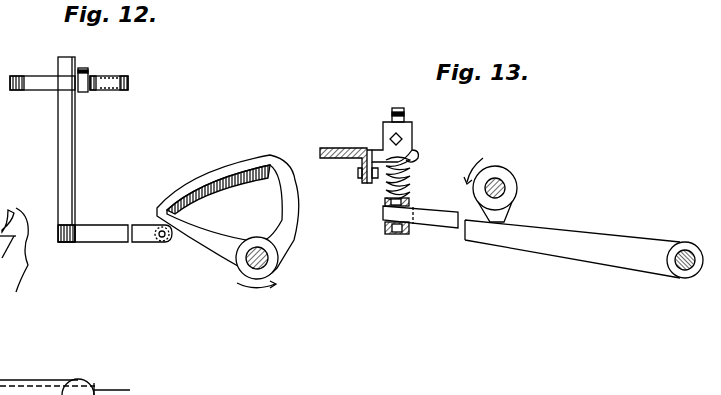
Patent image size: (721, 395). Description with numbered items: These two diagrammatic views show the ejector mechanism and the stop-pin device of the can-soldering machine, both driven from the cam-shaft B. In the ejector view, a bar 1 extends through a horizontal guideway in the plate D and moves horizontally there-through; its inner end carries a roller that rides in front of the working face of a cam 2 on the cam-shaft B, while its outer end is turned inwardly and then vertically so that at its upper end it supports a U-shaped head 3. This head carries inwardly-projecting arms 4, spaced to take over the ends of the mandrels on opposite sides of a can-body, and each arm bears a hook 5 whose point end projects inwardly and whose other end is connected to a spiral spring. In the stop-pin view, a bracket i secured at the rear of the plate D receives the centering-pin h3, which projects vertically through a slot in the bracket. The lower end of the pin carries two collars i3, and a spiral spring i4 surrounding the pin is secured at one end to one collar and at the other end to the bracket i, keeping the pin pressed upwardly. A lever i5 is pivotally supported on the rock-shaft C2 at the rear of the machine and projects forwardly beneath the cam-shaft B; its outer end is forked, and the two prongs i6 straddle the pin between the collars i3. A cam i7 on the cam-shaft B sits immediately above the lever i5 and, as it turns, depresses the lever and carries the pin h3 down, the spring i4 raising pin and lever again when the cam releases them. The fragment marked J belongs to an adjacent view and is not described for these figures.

In FIG. 12, the bar 1 is at (68, 153).
In FIG. 12, the cam 2 is at (228, 217).
In FIG. 12, the U-shaped head 3 is at (40, 82).
In FIG. 12, the inwardly-projecting arms 4 is at (104, 85).
In FIG. 12, the hook 5 is at (128, 76).
In FIG. 12, the cam-shaft B is at (250, 268).
In FIG. 13, the cam-shaft B is at (495, 181).
In FIG. 12, the part J is at (25, 385).
In FIG. 13, the plate D is at (322, 148).
In FIG. 13, the bracket i is at (388, 143).
In FIG. 13, the centering-pin h3 is at (405, 114).
In FIG. 13, the collars i3 is at (385, 205).
In FIG. 13, the spiral spring i4 is at (412, 173).
In FIG. 13, the lever i5 is at (543, 240).
In FIG. 13, the prongs i6 is at (385, 212).
In FIG. 13, the cam i7 is at (513, 192).
In FIG. 13, the rock-shaft C2 is at (684, 270).